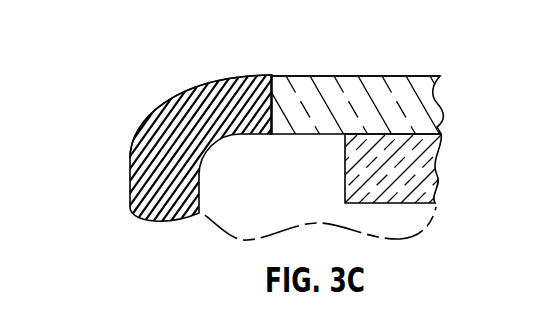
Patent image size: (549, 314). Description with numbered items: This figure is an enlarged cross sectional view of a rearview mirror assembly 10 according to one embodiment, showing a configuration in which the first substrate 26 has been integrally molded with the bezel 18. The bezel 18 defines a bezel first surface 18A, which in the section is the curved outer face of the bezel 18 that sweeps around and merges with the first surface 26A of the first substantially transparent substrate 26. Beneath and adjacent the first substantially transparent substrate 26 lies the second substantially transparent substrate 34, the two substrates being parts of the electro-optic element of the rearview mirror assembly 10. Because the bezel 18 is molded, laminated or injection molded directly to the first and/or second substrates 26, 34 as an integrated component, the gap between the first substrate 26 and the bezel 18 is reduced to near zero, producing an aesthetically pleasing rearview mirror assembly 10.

The rearview mirror assembly 10 is at (118, 87).
The bezel 18 is at (157, 148).
The bezel first surface 18A is at (207, 80).
The first substantially transparent substrate 26 is at (410, 92).
The first surface 26A is at (346, 76).
The second substantially transparent substrate 34 is at (420, 163).